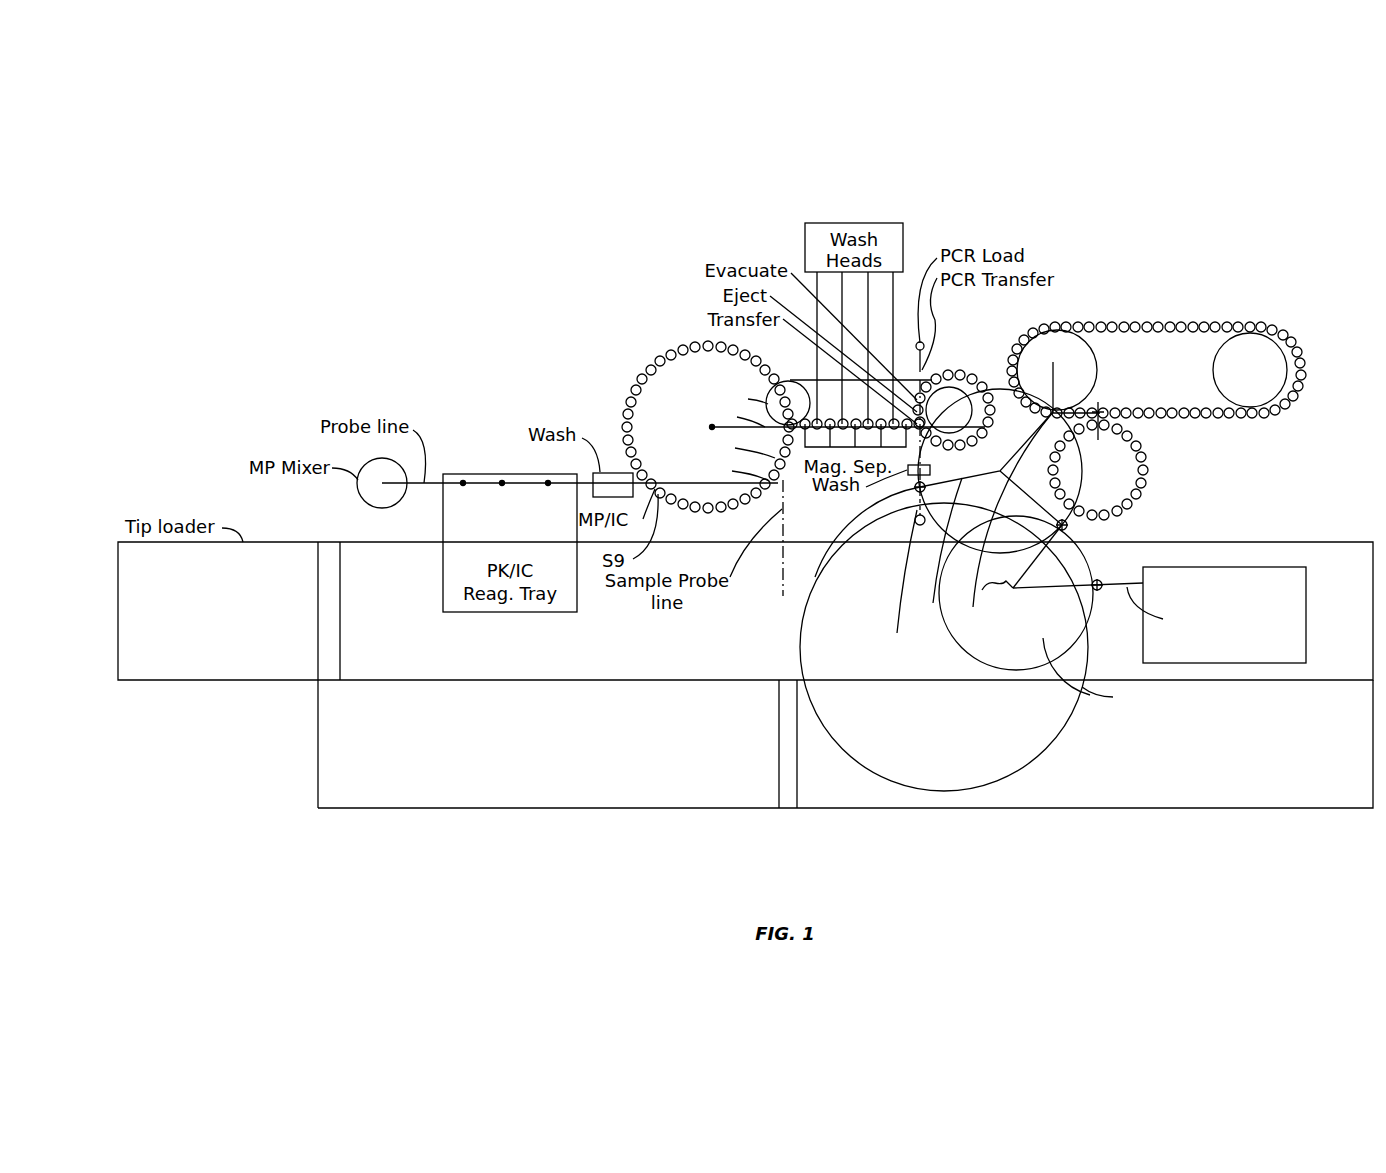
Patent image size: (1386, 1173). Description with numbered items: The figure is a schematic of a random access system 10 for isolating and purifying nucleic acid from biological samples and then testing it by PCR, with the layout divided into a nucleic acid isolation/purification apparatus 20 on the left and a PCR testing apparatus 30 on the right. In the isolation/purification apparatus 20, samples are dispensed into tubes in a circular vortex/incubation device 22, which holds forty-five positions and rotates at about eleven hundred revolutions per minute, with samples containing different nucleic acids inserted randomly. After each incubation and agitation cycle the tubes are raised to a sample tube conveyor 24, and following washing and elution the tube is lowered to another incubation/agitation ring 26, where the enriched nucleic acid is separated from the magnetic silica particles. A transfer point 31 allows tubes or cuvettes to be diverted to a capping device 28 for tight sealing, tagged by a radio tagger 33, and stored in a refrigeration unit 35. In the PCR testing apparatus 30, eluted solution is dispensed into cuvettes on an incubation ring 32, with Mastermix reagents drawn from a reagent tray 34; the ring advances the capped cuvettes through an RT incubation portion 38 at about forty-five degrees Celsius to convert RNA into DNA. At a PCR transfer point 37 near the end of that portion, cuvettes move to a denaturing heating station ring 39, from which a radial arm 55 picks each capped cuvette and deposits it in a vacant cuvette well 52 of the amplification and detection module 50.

The random access system 10 is at (1011, 186).
The nucleic acid isolation/purification apparatus 20 is at (993, 227).
The vortex/incubation device 22 is at (650, 371).
The sample tube conveyor 24 is at (804, 383).
The incubation/agitation ring 26 is at (962, 374).
The capping device 28 is at (918, 493).
The PCR testing apparatus 30 is at (1327, 237).
The transfer point 31 is at (927, 488).
The incubation ring 32 is at (1052, 325).
The tagger 33 is at (1067, 525).
The reagent tray 34 is at (865, 767).
The refrigeration unit 35 is at (1306, 570).
The PCR transfer point 37 is at (1103, 426).
The RT incubation portion 38 is at (1150, 326).
The denaturing heating station ring 39 is at (1145, 470).
The amplification and detection module 50 is at (1093, 612).
The cuvette well 52 is at (1100, 582).
The radial arm 55 is at (1003, 472).